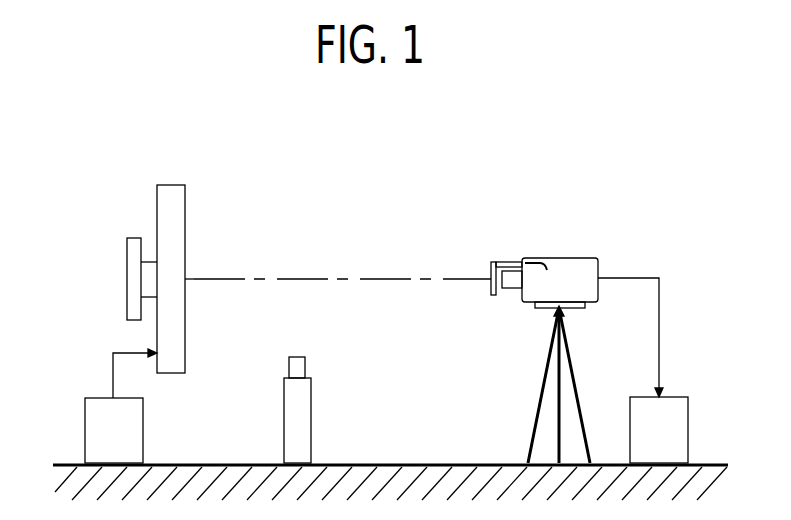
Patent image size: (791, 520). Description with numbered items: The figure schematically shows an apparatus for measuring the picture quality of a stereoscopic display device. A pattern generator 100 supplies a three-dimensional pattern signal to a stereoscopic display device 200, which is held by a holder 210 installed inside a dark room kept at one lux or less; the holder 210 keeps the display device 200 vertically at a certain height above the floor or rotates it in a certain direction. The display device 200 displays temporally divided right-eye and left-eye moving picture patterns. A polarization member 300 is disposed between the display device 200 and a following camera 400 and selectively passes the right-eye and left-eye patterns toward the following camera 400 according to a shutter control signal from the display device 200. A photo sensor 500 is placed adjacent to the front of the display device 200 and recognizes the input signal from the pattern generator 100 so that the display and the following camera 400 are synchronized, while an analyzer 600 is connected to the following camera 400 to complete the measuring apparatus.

The pattern generator 100 is at (85, 398).
The 3D display device 200 is at (157, 186).
The holder 210 is at (127, 238).
The polarization member 300 is at (492, 262).
The following camera 400 is at (598, 258).
The photo sensor 500 is at (306, 366).
The analyzer 600 is at (688, 397).